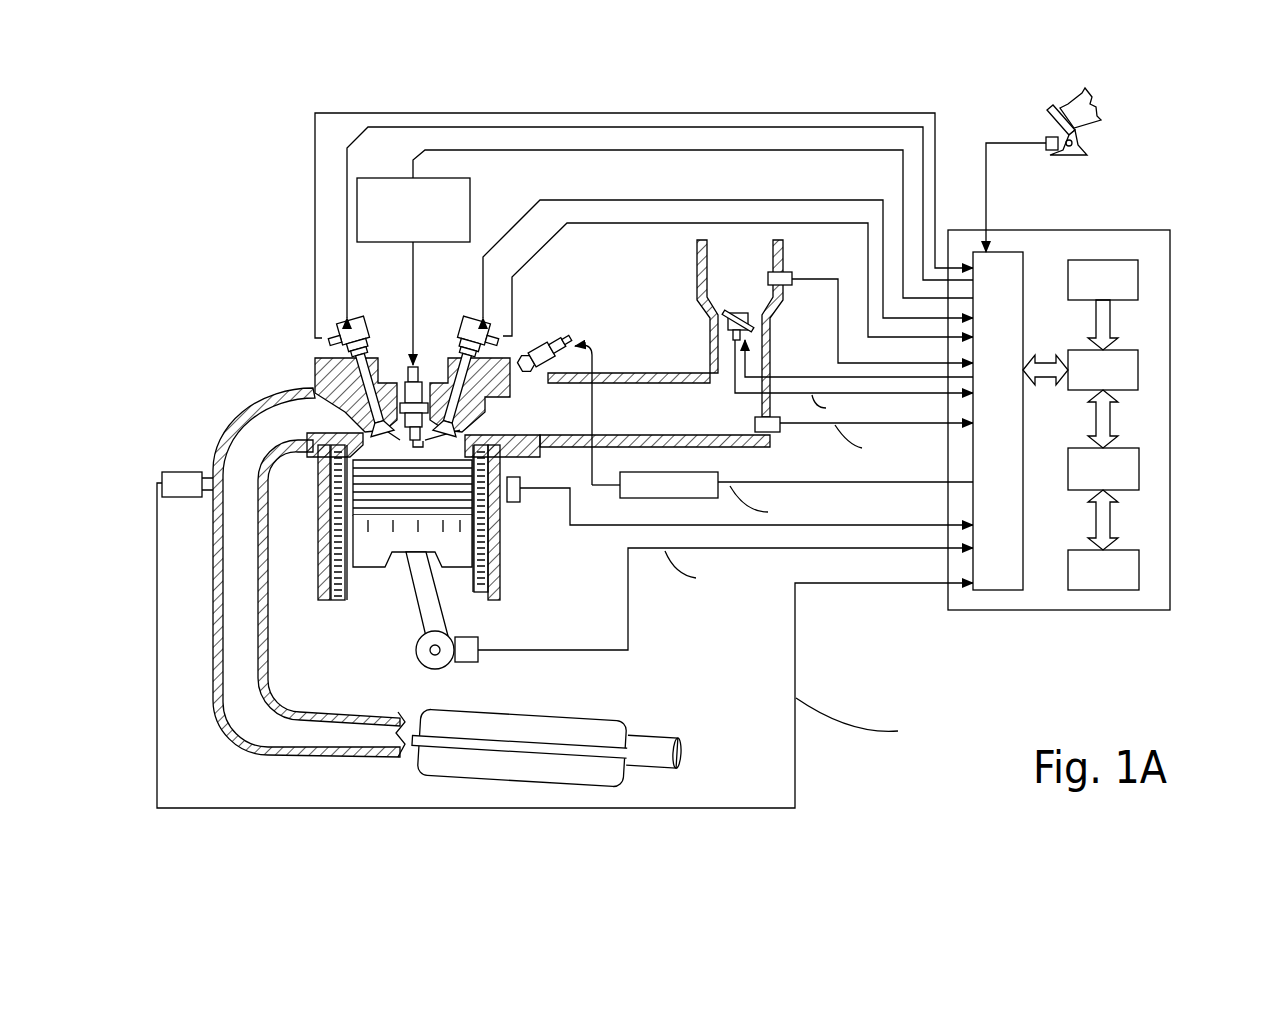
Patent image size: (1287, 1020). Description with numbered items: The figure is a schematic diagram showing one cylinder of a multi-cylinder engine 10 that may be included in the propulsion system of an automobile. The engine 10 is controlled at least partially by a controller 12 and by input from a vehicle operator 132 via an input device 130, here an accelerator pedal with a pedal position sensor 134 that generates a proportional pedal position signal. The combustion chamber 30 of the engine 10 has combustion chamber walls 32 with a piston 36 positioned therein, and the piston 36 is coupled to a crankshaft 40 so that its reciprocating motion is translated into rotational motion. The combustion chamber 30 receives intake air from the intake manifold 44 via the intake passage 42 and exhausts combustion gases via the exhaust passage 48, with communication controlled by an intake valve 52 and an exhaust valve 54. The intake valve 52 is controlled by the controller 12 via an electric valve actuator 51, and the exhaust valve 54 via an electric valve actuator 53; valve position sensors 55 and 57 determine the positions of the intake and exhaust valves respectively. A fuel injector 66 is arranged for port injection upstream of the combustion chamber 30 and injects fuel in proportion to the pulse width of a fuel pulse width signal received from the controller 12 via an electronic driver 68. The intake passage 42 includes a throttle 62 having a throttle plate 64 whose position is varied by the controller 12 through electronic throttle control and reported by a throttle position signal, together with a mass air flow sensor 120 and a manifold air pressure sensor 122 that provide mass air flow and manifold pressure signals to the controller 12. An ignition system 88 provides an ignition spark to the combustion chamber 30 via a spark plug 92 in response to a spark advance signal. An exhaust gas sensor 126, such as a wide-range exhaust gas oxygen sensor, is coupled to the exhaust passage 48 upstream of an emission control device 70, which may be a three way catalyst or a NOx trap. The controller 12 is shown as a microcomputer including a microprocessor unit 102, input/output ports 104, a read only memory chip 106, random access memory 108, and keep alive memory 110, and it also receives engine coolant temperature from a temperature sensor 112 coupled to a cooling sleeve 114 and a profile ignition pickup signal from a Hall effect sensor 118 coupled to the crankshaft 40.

The engine 10 is at (252, 306).
The controller 12 is at (1170, 238).
The combustion chamber 30 is at (345, 535).
The combustion chamber walls 32 is at (357, 588).
The piston 36 is at (415, 545).
The crankshaft 40 is at (427, 668).
The intake passage 42 is at (754, 328).
The intake manifold 44 is at (655, 343).
The exhaust passage 48 is at (309, 572).
The electric valve actuator 51 is at (460, 325).
The intake valve 52 is at (455, 432).
The electric valve actuator 53 is at (368, 325).
The exhaust valve 54 is at (365, 420).
The valve position sensor 55 is at (502, 322).
The valve position sensor 57 is at (332, 330).
The throttle 62 is at (750, 320).
The throttle plate 64 is at (722, 312).
The fuel injector 66 is at (546, 348).
The electronic driver 68 is at (643, 499).
The emission control device 70 is at (582, 714).
The ignition system 88 is at (367, 178).
The spark plug 92 is at (420, 365).
The microprocessor unit 102 is at (1138, 372).
The input/output ports 104 is at (1025, 262).
The read only memory chip 106 is at (1138, 275).
The random access memory 108 is at (1139, 468).
The keep alive memory 110 is at (1139, 572).
The temperature sensor 112 is at (520, 498).
The cooling sleeve 114 is at (502, 560).
The Hall effect sensor 118 is at (467, 662).
The mass air flow sensor 120 is at (791, 287).
The manifold air pressure sensor 122 is at (782, 433).
The exhaust gas sensor 126 is at (162, 478).
The input device 130 is at (1049, 120).
The vehicle operator 132 is at (1096, 123).
The pedal position sensor 134 is at (1046, 153).